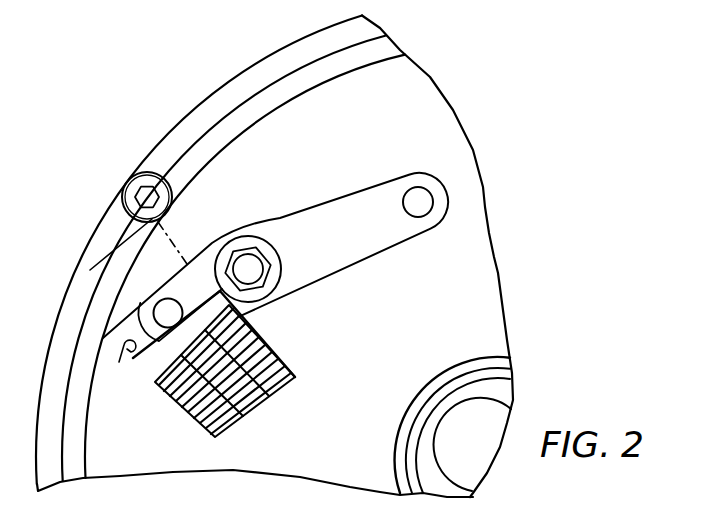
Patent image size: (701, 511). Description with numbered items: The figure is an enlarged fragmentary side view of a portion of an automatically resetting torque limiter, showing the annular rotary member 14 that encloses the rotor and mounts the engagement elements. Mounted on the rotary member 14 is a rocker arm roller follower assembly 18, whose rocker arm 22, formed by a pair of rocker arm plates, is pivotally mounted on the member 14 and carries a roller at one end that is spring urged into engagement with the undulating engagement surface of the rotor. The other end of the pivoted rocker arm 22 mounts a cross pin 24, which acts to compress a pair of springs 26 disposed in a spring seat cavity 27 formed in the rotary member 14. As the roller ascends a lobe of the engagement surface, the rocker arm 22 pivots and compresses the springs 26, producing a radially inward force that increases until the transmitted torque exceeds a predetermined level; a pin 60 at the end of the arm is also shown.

The rotary member 14 is at (59, 310).
The rocker arm roller follower assembly 18 is at (277, 222).
The rocker arm 22 is at (336, 203).
The cross pin 24 is at (157, 308).
The spring 26 is at (268, 349).
The spring seat cavity 27 is at (119, 364).
The pin 60 is at (433, 197).